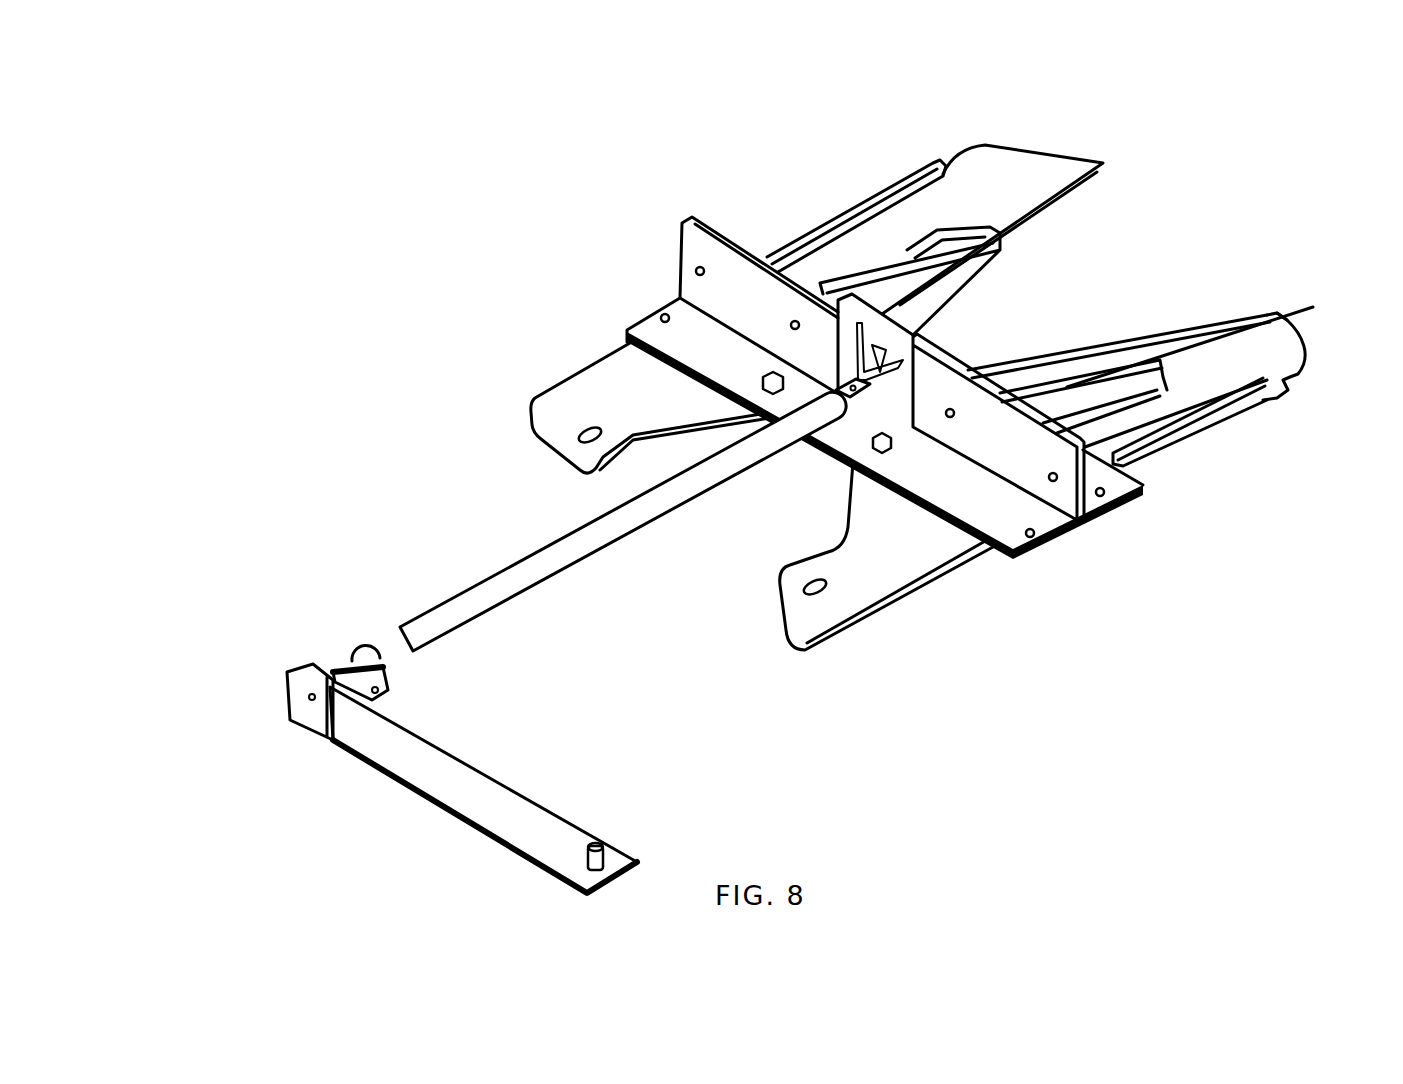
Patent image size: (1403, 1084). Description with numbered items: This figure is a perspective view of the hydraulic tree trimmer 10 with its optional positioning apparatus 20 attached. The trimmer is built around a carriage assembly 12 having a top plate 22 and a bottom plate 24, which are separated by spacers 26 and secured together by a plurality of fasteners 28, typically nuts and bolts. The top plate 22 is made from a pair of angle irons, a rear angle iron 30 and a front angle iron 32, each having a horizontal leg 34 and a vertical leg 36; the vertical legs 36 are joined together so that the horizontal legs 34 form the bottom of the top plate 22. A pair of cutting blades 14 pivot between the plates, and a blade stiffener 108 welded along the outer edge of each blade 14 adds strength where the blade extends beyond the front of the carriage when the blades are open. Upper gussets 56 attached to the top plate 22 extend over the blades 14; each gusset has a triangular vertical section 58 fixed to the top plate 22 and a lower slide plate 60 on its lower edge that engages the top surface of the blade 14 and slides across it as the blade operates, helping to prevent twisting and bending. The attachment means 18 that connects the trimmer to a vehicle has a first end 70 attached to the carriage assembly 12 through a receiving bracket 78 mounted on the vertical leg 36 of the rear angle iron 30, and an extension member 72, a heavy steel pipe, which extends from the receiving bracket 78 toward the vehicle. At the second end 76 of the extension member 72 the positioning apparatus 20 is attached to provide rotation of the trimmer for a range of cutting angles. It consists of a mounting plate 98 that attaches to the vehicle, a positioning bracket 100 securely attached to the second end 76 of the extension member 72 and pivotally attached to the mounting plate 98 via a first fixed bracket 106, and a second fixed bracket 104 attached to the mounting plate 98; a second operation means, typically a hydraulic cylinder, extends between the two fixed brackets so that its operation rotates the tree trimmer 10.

The hydraulic tree trimmer 10 is at (575, 352).
The carriage assembly 12 is at (888, 414).
The cutting blades 14 is at (1058, 292).
The attachment means 18 is at (562, 539).
The positioning apparatus 20 is at (540, 804).
The top plate 22 is at (970, 513).
The bottom plate 24 is at (829, 452).
The spacers 26 is at (1013, 567).
The fasteners 28 is at (663, 313).
The rear angle iron 30 is at (923, 477).
The front angle iron 32 is at (1318, 306).
The horizontal leg 34 is at (673, 340).
The vertical leg 36 is at (725, 270).
The upper gussets 56 is at (1020, 370).
The triangular vertical section 58 is at (1067, 387).
The lower slide plate 60 is at (1170, 360).
The first end 70 is at (823, 403).
The extension member 72 is at (557, 577).
The second end 76 is at (403, 627).
The receiving bracket 78 is at (815, 283).
The mounting plate 98 is at (453, 793).
The positioning bracket 100 is at (333, 667).
The second fixed bracket 104 is at (607, 843).
The first fixed bracket 106 is at (312, 710).
The blade stiffener 108 is at (898, 180).